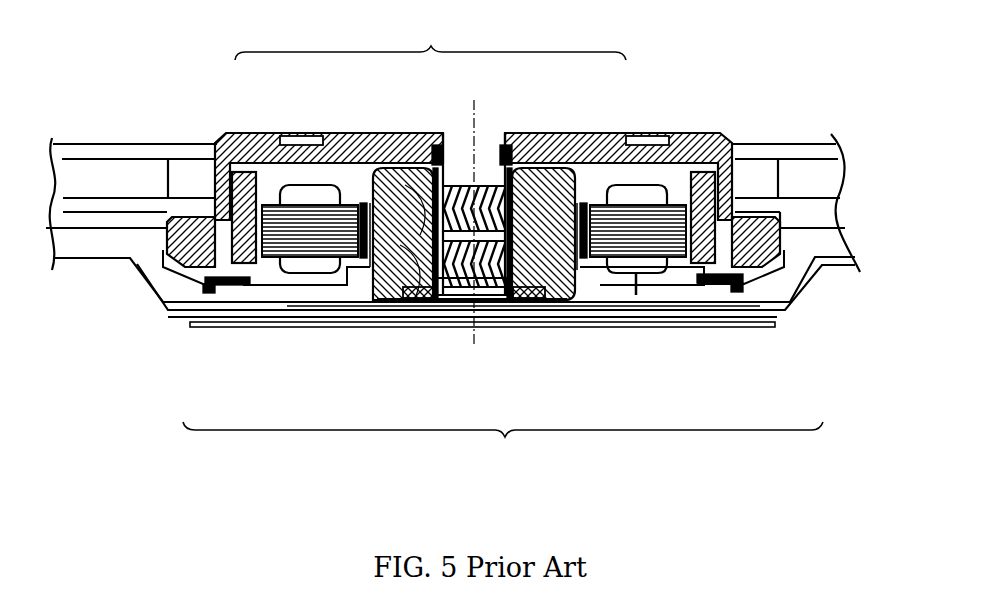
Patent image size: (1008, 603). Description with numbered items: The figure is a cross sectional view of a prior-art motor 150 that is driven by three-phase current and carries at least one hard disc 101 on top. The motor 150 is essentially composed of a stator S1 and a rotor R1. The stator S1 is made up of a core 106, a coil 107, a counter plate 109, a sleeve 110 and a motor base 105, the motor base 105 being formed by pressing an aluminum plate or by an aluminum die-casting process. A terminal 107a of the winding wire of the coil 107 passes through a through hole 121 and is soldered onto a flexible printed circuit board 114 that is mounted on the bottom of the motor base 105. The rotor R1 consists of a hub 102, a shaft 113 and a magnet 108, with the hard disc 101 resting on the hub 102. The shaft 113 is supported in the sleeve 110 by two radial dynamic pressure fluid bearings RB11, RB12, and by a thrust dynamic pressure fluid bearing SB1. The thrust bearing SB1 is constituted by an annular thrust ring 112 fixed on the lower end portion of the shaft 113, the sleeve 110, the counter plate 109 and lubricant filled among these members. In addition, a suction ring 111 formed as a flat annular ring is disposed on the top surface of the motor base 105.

The hard disc 101 is at (796, 208).
The hub 102 is at (590, 160).
The motor base 105 is at (265, 292).
The core 106 is at (578, 305).
The coil 107 is at (655, 262).
The terminal 107a is at (600, 290).
The magnet 108 is at (240, 170).
The counter plate 109 is at (537, 306).
The sleeve 110 is at (373, 248).
The suction ring 111 is at (230, 288).
The thrust ring 112 is at (418, 306).
The shaft 113 is at (490, 165).
The flexible printed circuit board 114 is at (770, 304).
The through hole 121 is at (700, 290).
The motor 150 is at (702, 38).
The rotor R1 is at (414, 41).
The stator S1 is at (489, 471).
The radial dynamic pressure fluid bearing RB11 is at (420, 210).
The radial dynamic pressure fluid bearing RB12 is at (377, 308).
The thrust dynamic pressure fluid bearing SB1 is at (510, 335).